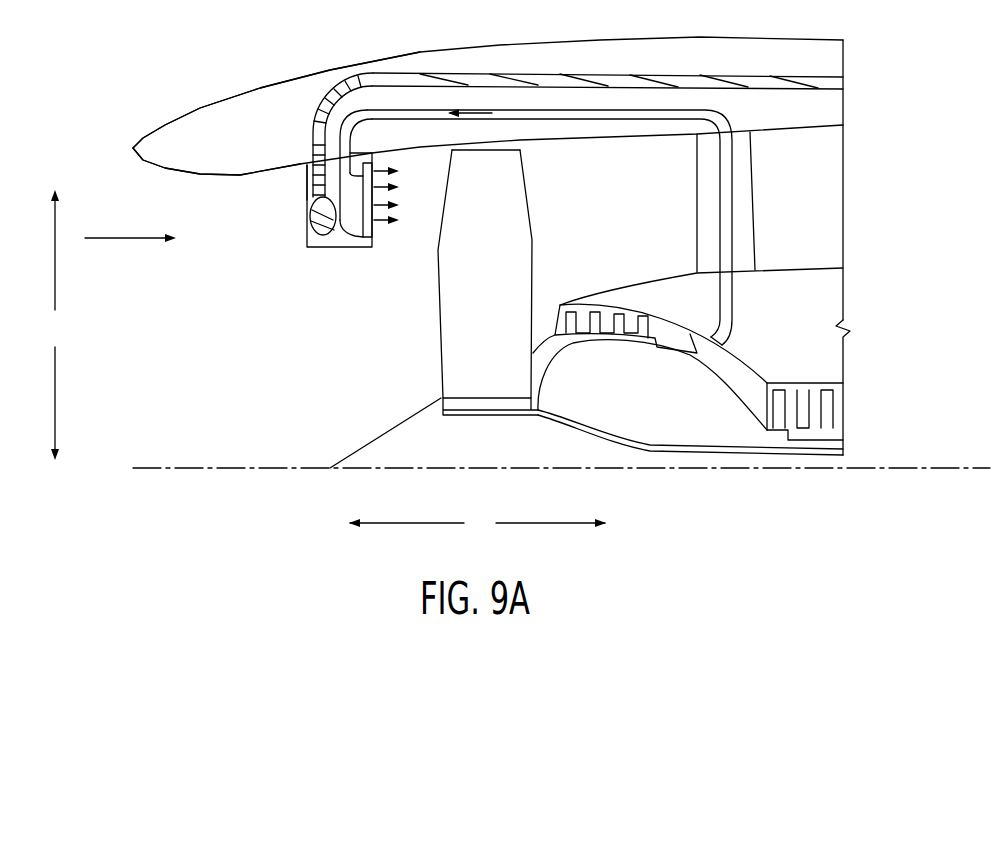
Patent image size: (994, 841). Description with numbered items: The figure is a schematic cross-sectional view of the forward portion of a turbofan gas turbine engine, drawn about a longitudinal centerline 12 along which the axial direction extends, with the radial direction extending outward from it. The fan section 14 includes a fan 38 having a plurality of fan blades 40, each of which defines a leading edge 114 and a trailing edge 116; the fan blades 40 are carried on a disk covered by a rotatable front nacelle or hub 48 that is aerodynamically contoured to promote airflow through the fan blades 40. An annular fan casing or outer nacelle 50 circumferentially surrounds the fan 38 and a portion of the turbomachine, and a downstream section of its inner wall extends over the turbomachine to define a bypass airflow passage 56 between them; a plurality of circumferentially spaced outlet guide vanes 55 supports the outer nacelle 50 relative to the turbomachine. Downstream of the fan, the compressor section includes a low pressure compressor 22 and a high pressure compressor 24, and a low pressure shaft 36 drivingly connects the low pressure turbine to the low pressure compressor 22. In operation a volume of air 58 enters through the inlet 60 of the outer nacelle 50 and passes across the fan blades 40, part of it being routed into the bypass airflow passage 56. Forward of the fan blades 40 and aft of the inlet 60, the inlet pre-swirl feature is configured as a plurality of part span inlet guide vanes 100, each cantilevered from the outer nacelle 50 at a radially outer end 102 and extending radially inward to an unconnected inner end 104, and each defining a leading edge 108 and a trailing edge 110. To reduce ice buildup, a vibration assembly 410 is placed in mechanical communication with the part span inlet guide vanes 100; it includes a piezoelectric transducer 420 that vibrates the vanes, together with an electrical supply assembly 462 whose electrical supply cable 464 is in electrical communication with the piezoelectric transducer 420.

The longitudinal centerline 12 is at (208, 470).
The fan section 14 is at (366, 69).
The low pressure compressor 22 is at (681, 318).
The high pressure compressor 24 is at (795, 372).
The low pressure shaft 36 is at (697, 456).
The fan 38 is at (497, 127).
The fan blade 40 is at (520, 267).
The front nacelle or hub 48 is at (352, 451).
The outer nacelle 50 is at (477, 46).
The outlet guide vane 55 is at (745, 218).
The bypass airflow passage 56 is at (665, 228).
The volume of air 58 is at (140, 240).
The inlet 60 is at (122, 197).
The part span inlet guide vane 100 is at (308, 155).
The outer end 102 is at (357, 140).
The inner end 104 is at (340, 263).
The leading edge 108 is at (281, 230).
The trailing edge 110 is at (395, 245).
The leading edge 114 is at (427, 261).
The trailing edge 116 is at (534, 235).
The vibration assembly 410 is at (299, 183).
The piezoelectric transducer 420 is at (313, 221).
The electrical supply assembly 462 is at (764, 52).
The electrical supply cable 464 is at (823, 82).